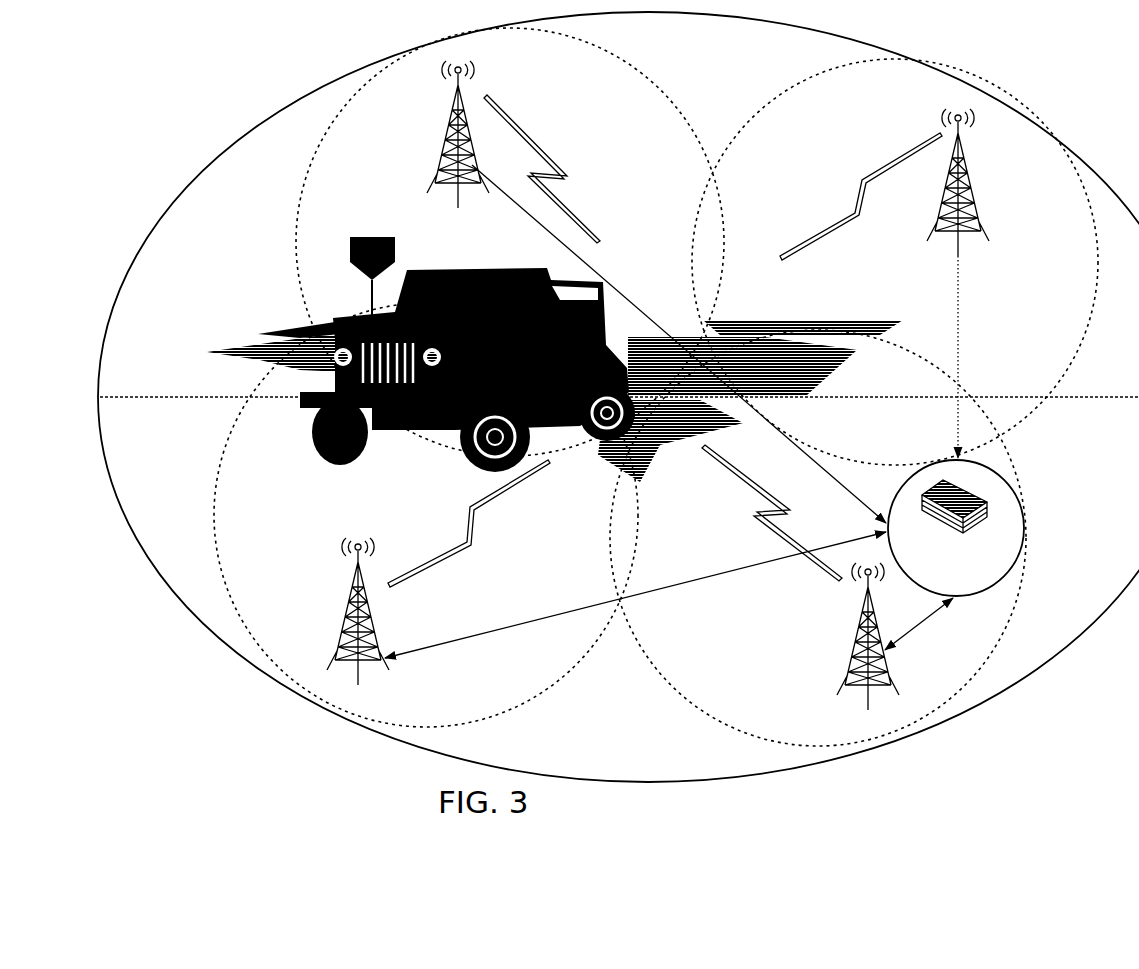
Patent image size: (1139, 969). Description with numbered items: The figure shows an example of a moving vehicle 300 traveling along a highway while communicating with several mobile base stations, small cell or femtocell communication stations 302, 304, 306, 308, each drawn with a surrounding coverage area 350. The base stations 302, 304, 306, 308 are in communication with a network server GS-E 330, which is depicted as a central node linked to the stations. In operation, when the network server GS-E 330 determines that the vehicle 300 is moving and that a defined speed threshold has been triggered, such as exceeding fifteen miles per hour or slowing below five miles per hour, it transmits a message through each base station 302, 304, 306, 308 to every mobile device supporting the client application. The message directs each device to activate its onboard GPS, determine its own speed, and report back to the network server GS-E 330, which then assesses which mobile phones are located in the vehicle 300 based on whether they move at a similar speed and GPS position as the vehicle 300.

The vehicle 300 is at (498, 241).
The mobile base station 302 is at (934, 176).
The mobile base station 304 is at (839, 641).
The mobile base station 306 is at (480, 131).
The mobile base station 308 is at (387, 619).
The network server GS-E 330 is at (956, 528).
The coverage area 350 is at (658, 633).